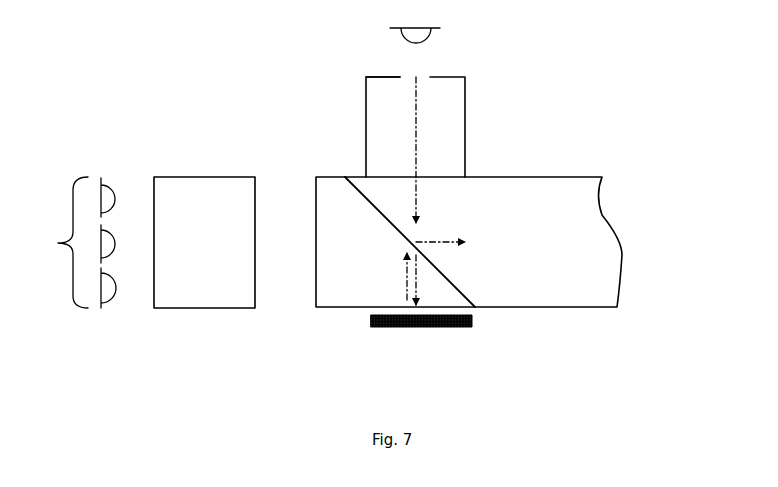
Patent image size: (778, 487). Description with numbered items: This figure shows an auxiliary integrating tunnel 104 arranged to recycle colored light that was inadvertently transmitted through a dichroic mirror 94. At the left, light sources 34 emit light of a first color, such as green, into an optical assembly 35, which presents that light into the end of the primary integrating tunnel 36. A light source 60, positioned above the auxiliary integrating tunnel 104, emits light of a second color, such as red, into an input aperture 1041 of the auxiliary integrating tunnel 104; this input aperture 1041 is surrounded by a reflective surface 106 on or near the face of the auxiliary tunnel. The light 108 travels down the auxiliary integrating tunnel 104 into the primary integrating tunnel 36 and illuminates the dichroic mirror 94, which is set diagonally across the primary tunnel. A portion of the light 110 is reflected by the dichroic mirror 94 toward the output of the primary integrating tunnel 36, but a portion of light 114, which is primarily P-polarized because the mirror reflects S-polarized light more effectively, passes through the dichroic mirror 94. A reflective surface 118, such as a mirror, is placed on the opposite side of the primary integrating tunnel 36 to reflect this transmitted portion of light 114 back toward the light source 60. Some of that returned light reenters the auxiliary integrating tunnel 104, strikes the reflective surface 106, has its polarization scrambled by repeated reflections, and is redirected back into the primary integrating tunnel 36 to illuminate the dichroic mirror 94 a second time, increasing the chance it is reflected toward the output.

The light sources 34 is at (58, 243).
The optical assembly 35 is at (195, 177).
The primary integrating tunnel 36 is at (565, 307).
The light source 60 is at (423, 28).
The dichroic mirror 94 is at (388, 223).
The auxiliary integrating tunnel 104 is at (465, 163).
The input aperture 1041 is at (424, 77).
The reflective surface 106 is at (380, 77).
The light 108 is at (418, 150).
The portion of the light 110 is at (448, 240).
The portion of light 114 is at (418, 288).
The reflective surface 118 is at (432, 327).